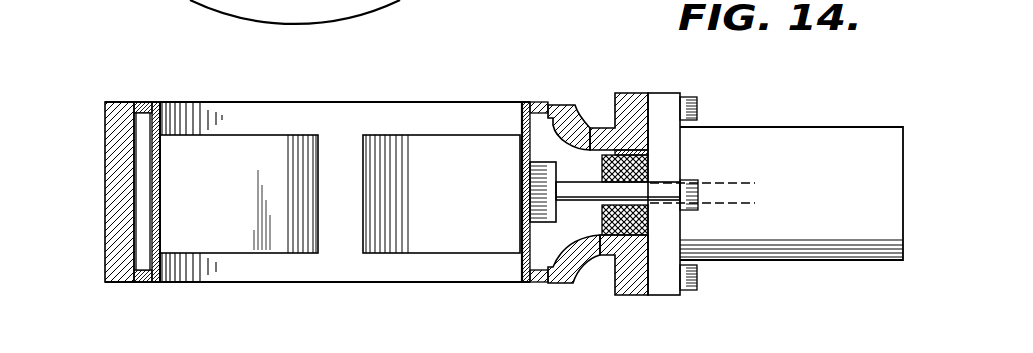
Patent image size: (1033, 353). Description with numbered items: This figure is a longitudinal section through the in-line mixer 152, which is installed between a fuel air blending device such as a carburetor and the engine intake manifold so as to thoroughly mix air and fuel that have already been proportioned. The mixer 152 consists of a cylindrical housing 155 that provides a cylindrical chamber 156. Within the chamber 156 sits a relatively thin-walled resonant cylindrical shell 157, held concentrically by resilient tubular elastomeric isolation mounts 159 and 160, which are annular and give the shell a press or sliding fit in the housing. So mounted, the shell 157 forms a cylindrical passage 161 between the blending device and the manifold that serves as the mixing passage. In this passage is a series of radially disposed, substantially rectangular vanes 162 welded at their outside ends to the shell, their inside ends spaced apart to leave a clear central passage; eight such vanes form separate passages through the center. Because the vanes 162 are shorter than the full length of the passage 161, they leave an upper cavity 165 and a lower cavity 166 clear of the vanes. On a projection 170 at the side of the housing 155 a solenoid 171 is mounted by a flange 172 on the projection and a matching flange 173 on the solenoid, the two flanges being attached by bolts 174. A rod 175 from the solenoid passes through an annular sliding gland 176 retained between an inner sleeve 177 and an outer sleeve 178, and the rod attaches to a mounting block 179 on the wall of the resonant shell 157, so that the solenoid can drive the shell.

The in-line mixer 152 is at (148, 82).
The cylindrical housing 155 is at (105, 155).
The cylindrical chamber 156 is at (136, 248).
The resonant cylindrical shell 157 is at (150, 202).
The isolation mount 159 is at (540, 100).
The isolation mount 160 is at (545, 285).
The cylindrical passage 161 is at (158, 226).
The vanes 162 is at (417, 148).
The upper cavity 165 is at (258, 112).
The lower cavity 166 is at (302, 275).
The projection 170 is at (583, 106).
The solenoid 171 is at (860, 227).
The flange 172 is at (627, 103).
The matching flange 173 is at (665, 228).
The bolts 174 is at (690, 185).
The rod 175 is at (580, 188).
The annular sliding gland 176 is at (582, 255).
The inner sleeve 177 is at (630, 248).
The outer sleeve 178 is at (622, 240).
The mounting block 179 is at (537, 198).